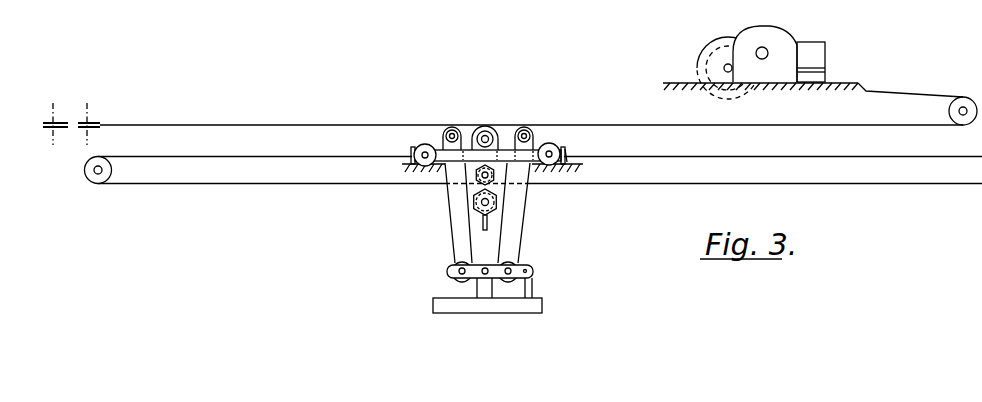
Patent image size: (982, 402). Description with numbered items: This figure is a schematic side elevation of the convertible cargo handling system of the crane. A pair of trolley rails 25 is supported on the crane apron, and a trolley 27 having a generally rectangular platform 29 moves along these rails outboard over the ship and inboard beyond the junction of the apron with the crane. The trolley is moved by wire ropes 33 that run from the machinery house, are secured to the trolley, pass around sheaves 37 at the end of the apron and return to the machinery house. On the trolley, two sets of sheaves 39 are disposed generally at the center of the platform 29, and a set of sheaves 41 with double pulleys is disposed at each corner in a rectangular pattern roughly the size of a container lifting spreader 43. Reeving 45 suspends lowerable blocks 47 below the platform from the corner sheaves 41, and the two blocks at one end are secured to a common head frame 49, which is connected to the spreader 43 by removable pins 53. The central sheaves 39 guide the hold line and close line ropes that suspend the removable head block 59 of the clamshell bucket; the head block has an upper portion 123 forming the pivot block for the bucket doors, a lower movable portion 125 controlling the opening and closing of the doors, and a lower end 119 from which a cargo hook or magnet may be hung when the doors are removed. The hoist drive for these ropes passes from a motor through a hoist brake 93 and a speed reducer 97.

The trolley rails 25 is at (583, 170).
The trolley 27 is at (560, 150).
The platform 29 is at (440, 147).
The wire ropes 33 is at (247, 186).
The sheaves 37 is at (100, 178).
The sets of sheaves 39 is at (483, 126).
The set of sheaves 41 is at (456, 125).
The spreader 43 is at (543, 311).
The reeving 45 is at (586, 251).
The lowerable blocks 47 is at (458, 263).
The head frame 49 is at (447, 270).
The pins 53 is at (488, 266).
The head block 59 is at (508, 188).
The hoist brake 93 is at (827, 50).
The speed reducer 97 is at (777, 26).
The lower end 119 is at (481, 226).
The upper portion 123 is at (473, 172).
The lower movable portion 125 is at (473, 203).